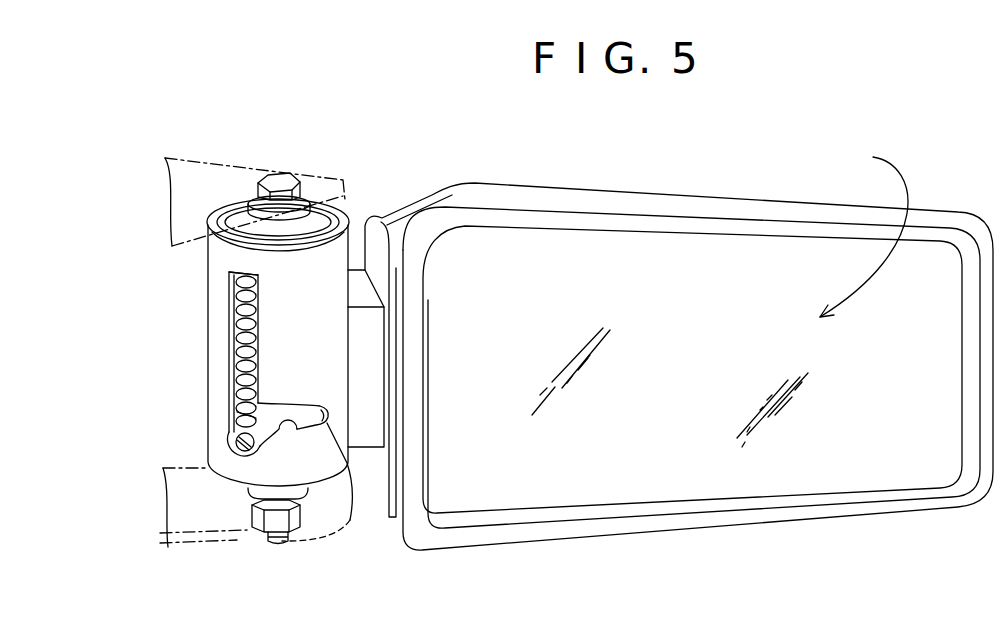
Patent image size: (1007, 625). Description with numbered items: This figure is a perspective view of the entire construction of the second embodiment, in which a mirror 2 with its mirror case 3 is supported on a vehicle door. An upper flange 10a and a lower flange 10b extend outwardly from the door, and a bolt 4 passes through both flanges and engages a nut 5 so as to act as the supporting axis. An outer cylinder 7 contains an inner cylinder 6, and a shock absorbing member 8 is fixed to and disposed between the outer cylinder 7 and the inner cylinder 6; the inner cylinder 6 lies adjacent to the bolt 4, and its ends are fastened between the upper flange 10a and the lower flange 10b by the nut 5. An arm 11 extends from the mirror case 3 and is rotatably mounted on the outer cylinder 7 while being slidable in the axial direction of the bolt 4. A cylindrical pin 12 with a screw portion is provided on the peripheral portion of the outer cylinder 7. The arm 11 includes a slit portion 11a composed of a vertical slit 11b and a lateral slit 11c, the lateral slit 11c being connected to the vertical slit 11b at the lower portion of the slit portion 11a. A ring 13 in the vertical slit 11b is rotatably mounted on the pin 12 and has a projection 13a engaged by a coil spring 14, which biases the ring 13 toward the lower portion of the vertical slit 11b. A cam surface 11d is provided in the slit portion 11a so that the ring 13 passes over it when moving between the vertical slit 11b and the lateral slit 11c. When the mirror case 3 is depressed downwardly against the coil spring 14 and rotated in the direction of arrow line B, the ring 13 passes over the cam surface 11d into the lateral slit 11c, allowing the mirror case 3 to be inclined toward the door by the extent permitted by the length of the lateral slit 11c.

The mirror 2 is at (806, 488).
The mirror case 3 is at (530, 538).
The bolt 4 is at (287, 177).
The nut 5 is at (260, 522).
The inner cylinder 6 is at (310, 200).
The outer cylinder 7 is at (222, 207).
The shock absorbing member 8 is at (238, 215).
The upper flange 10a is at (183, 180).
The lower flange 10b is at (172, 512).
The arm 11 is at (213, 263).
The slit portion 11a is at (220, 351).
The vertical slit 11b is at (222, 290).
The lateral slit 11c is at (318, 419).
The cam surface 11d is at (288, 422).
The cylindrical pin 12 is at (207, 465).
The ring 13 is at (236, 439).
The projection 13a is at (233, 408).
The coil spring 14 is at (233, 366).
The arrow line B is at (905, 180).